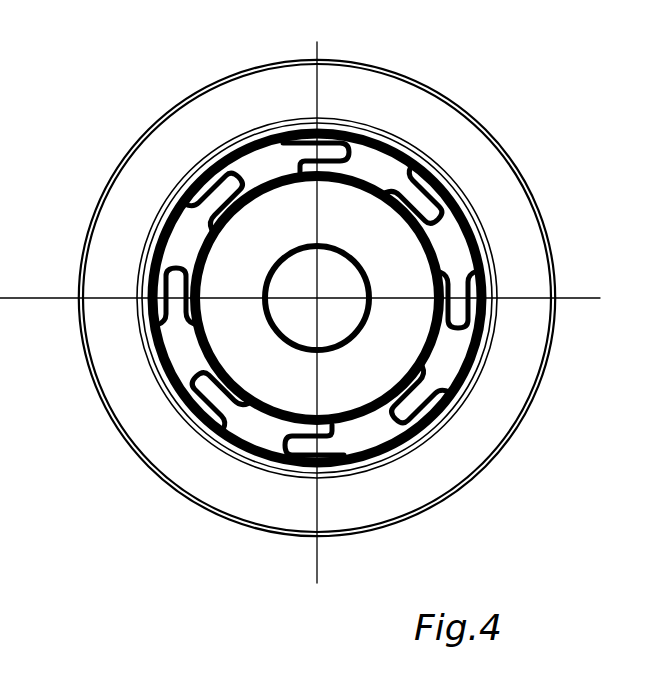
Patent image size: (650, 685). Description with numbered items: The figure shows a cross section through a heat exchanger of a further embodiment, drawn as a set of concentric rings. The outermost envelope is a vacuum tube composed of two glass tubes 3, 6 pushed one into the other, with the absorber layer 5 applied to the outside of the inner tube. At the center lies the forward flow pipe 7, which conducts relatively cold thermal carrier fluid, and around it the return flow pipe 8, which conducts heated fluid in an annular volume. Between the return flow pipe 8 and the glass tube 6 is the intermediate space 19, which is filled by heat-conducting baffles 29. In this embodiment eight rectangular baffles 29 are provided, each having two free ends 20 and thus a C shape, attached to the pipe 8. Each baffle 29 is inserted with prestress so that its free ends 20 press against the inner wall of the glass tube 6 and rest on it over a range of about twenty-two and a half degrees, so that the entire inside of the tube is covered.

The glass tube 3 is at (554, 292).
The absorber layer 5 is at (492, 234).
The glass tube 6 is at (458, 181).
The forward flow pipe 7 is at (372, 295).
The return flow pipe 8 is at (428, 357).
The intermediate space 19 is at (368, 440).
The free ends 20 is at (235, 440).
The heat-conducting baffle 29 is at (283, 143).